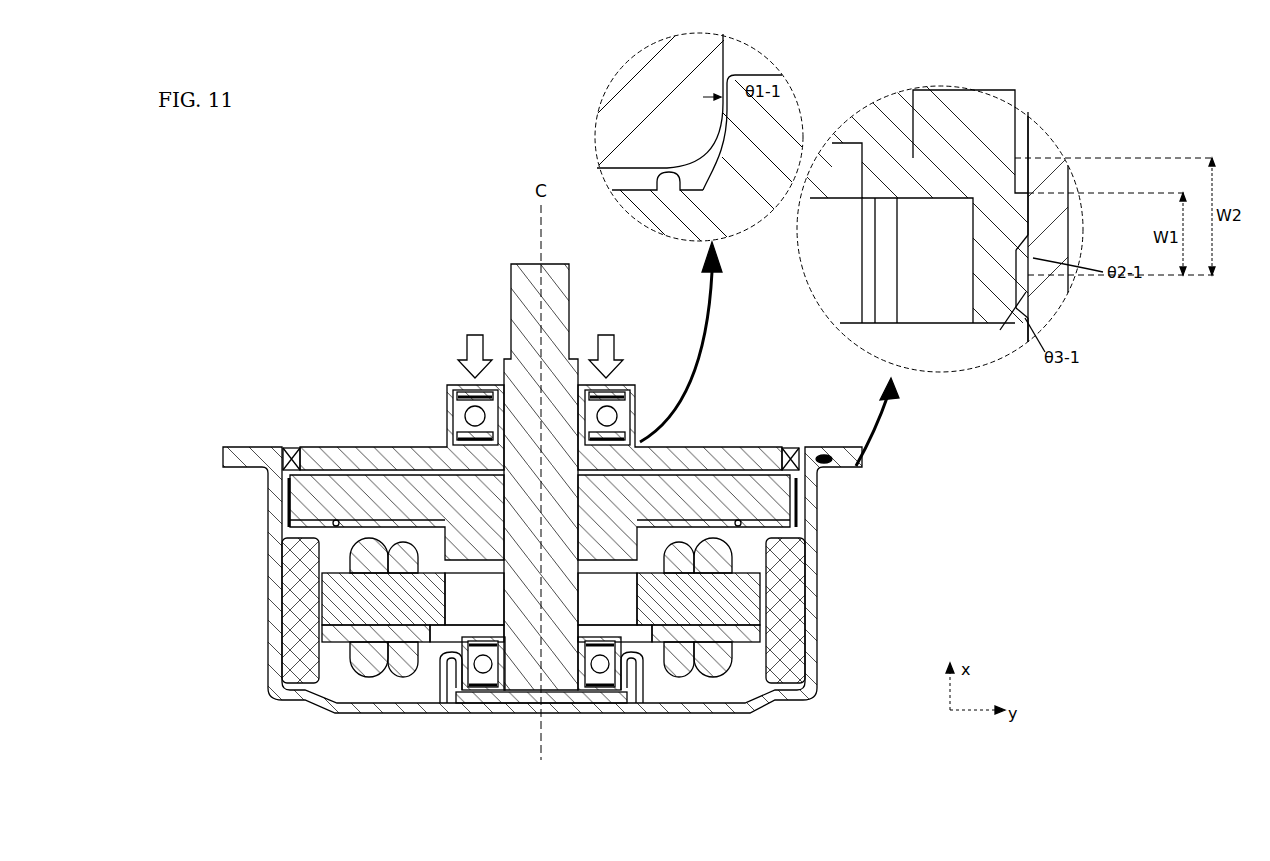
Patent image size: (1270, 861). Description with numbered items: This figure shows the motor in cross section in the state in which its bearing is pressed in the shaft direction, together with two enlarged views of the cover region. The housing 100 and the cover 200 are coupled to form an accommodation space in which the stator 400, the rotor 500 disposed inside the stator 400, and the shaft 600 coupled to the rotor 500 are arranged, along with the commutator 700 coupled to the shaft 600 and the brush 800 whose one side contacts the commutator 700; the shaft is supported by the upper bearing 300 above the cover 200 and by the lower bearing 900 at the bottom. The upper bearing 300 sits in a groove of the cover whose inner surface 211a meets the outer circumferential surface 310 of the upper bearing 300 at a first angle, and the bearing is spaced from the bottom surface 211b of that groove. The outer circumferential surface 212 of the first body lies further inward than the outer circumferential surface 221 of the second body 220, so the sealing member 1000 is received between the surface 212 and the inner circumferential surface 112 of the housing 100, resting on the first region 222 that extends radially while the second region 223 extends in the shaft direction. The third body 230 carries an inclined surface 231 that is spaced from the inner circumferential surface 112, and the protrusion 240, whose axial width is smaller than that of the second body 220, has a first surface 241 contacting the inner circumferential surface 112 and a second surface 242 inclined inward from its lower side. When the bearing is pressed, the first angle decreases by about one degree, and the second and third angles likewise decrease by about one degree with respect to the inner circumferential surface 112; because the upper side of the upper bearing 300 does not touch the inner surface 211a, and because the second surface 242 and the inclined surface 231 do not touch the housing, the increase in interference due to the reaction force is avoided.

The housing 100 is at (812, 582).
The inner circumferential surface 112 is at (1028, 130).
The cover 200 is at (772, 460).
The inner surface 211a is at (760, 74).
The bottom surface 211b is at (658, 193).
The outer circumferential surface 212 is at (918, 130).
The second body 220 is at (987, 428).
The outer circumferential surface 221 is at (1030, 166).
The first region 222 is at (933, 190).
The second region 223 is at (985, 235).
The third body 230 is at (1008, 250).
The inclined surface 231 is at (1033, 305).
The protrusion 240 is at (1033, 222).
The first surface 241 is at (1033, 205).
The second surface 242 is at (1030, 283).
The upper bearing 300 is at (637, 395).
The outer circumferential surface 310 is at (727, 38).
The stator 400 is at (785, 645).
The rotor 500 is at (745, 645).
The shaft 600 is at (600, 688).
The commutator 700 is at (643, 507).
The brush 800 is at (290, 528).
The lower bearing 900 is at (452, 692).
The sealing member 1000 is at (300, 448).